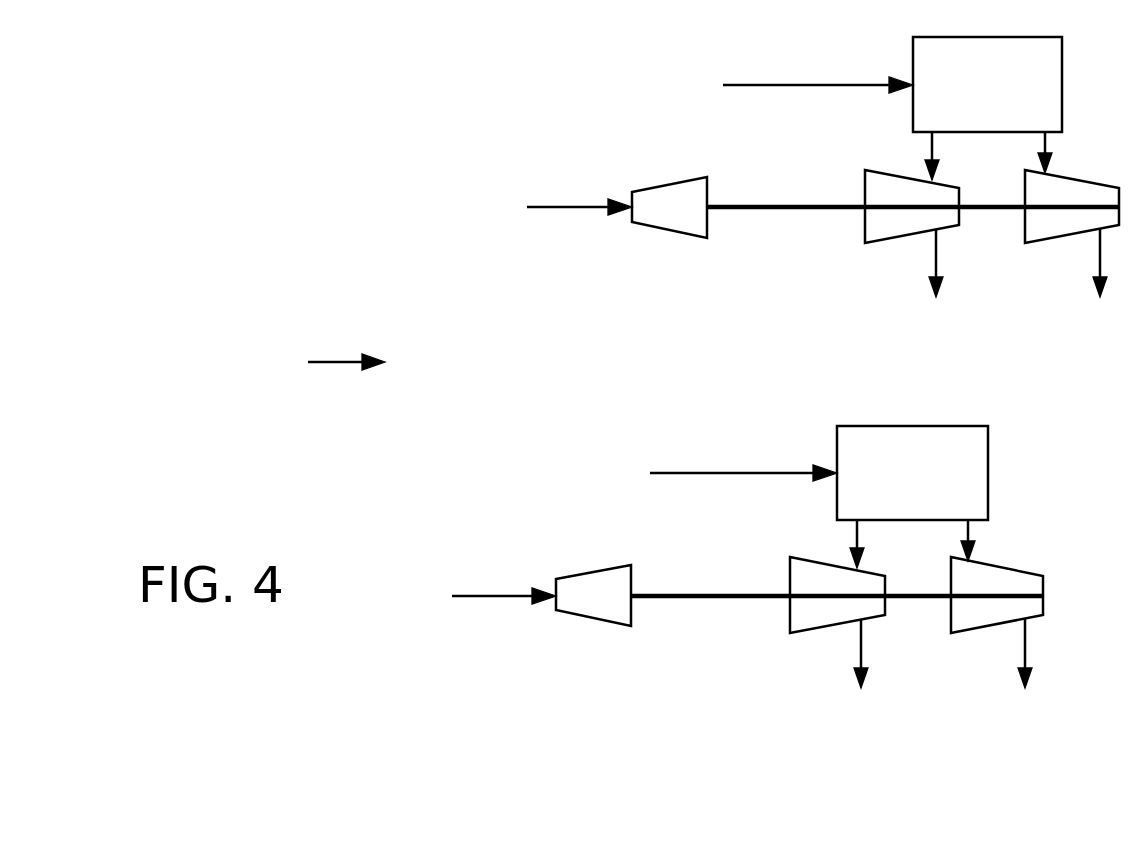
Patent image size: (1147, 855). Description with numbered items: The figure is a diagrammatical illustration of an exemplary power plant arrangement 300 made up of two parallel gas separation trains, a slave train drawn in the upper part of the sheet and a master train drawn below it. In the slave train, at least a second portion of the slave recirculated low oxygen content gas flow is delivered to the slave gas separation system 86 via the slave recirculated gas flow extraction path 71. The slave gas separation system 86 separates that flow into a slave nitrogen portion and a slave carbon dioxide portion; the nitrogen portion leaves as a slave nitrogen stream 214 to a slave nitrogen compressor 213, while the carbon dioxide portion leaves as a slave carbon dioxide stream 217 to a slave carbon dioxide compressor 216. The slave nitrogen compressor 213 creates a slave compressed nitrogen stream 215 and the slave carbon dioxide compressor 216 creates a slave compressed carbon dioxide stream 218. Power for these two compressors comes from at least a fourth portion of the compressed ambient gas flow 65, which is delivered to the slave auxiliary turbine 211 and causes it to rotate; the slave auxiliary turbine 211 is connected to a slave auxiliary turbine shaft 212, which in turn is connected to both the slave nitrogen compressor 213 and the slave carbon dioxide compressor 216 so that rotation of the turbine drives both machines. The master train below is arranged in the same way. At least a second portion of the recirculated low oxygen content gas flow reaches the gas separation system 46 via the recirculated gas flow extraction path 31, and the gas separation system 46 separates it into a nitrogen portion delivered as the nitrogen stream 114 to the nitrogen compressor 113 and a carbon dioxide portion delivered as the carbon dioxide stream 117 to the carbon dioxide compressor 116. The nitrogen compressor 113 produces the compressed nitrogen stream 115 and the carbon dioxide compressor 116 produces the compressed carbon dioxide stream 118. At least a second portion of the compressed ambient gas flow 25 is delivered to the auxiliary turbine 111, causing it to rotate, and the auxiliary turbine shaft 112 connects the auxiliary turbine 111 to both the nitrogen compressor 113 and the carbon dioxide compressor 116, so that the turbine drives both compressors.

The power plant arrangement 300 is at (315, 360).
The slave recirculated gas flow extraction path 71 is at (803, 85).
The slave gas separation system 86 is at (987, 84).
The compressed ambient gas flow 65 is at (590, 207).
The slave auxiliary turbine 211 is at (669, 207).
The slave auxiliary turbine shaft 212 is at (800, 207).
The slave nitrogen compressor 213 is at (865, 228).
The slave nitrogen stream 214 is at (929, 157).
The slave compressed nitrogen stream 215 is at (936, 282).
The slave carbon dioxide compressor 216 is at (1025, 226).
The slave carbon dioxide stream 217 is at (1048, 145).
The slave compressed carbon dioxide stream 218 is at (1100, 281).
The recirculated gas flow extraction path 31 is at (727, 473).
The gas separation system 46 is at (912, 473).
The compressed ambient gas flow 25 is at (519, 592).
The auxiliary turbine 111 is at (593, 595).
The auxiliary turbine shaft 112 is at (727, 592).
The nitrogen compressor 113 is at (790, 614).
The nitrogen stream 114 is at (853, 545).
The compressed nitrogen stream 115 is at (861, 671).
The carbon dioxide compressor 116 is at (950, 614).
The carbon dioxide stream 117 is at (975, 532).
The compressed carbon dioxide stream 118 is at (1025, 670).